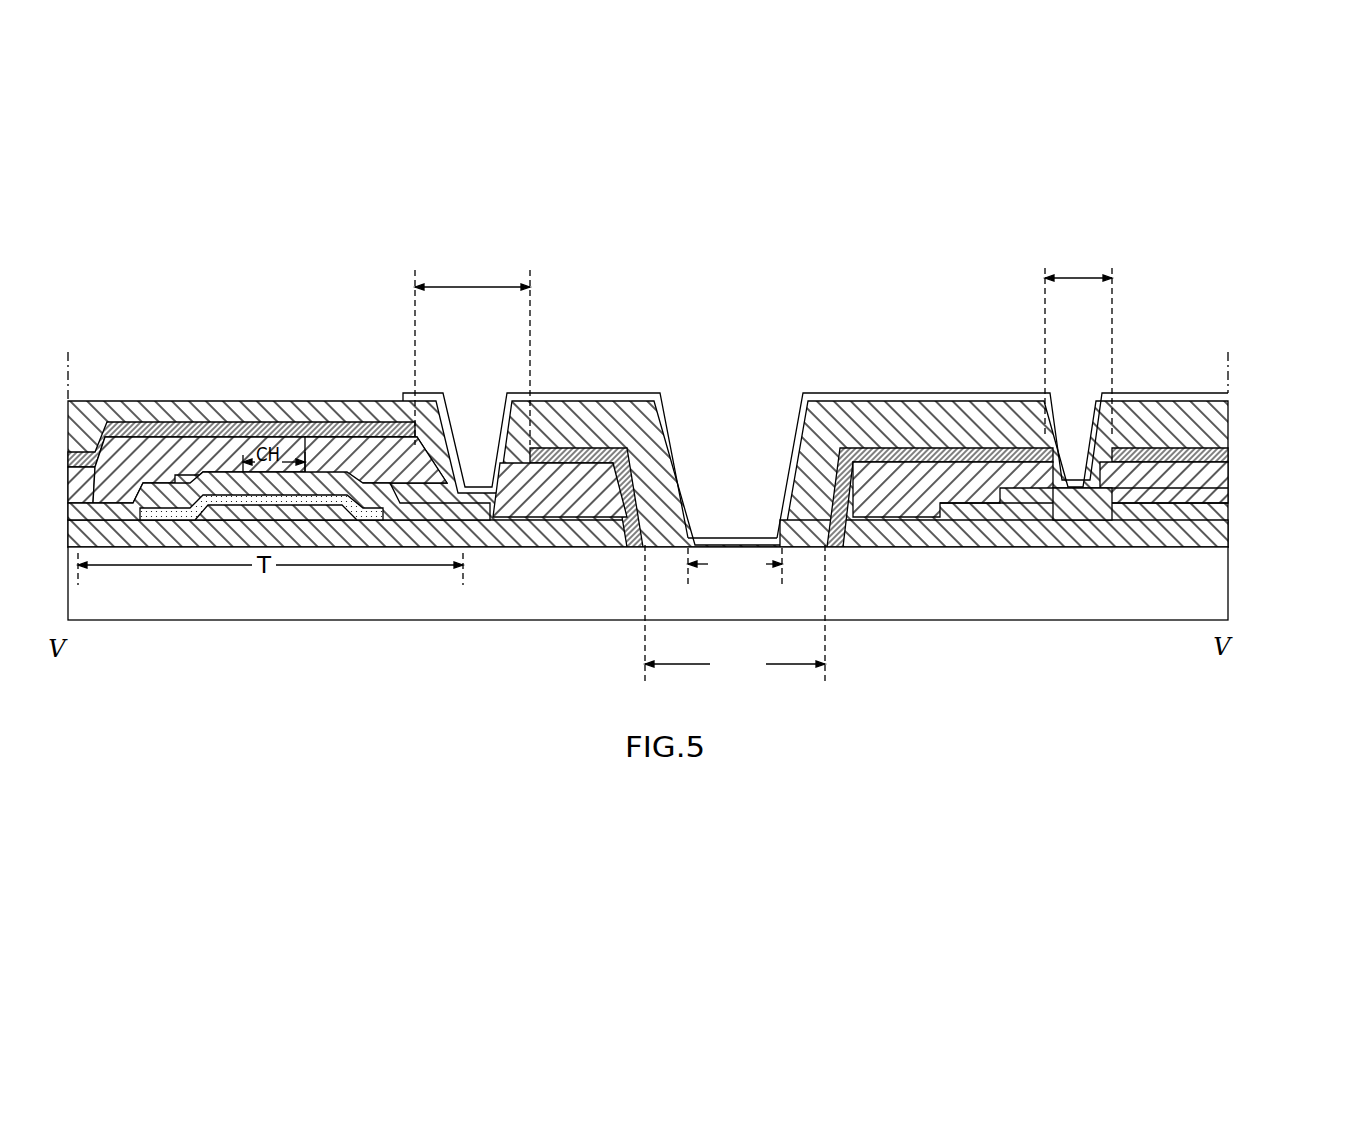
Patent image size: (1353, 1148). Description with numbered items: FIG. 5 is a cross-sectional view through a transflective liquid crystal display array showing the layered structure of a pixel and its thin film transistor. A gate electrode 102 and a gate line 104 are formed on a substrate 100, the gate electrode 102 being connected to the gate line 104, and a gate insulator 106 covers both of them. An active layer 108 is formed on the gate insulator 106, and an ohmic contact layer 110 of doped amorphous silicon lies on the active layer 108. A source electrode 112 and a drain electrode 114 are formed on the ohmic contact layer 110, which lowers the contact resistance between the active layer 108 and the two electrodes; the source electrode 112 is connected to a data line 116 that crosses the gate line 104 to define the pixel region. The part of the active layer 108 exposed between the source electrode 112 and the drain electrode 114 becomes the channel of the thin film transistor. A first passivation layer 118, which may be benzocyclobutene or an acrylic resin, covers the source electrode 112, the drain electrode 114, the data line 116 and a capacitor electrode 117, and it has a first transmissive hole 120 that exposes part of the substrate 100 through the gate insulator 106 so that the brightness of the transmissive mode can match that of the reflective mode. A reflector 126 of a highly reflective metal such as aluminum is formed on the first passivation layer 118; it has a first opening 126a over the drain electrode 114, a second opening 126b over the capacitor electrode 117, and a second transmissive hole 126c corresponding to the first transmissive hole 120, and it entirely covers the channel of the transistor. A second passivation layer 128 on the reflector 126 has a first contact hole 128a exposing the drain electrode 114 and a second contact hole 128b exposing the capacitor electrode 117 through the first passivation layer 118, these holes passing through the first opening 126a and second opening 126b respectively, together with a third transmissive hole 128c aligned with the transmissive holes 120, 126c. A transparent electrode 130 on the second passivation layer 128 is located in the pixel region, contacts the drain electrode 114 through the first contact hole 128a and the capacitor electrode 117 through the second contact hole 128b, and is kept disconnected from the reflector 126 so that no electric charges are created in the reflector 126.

The substrate 100 is at (537, 592).
The gate electrode 102 is at (282, 528).
The gate line 104 is at (1123, 533).
The gate insulator 106 is at (400, 528).
The active layer 108 is at (163, 522).
The ohmic contact layer 110 is at (193, 465).
The source electrode 112 is at (160, 490).
The drain electrode 114 is at (355, 425).
The data line 116 is at (97, 462).
The capacitor electrode 117 is at (1090, 505).
The first passivation layer 118 is at (218, 440).
The first transmissive hole 120 is at (728, 485).
The reflector 126 is at (396, 418).
The first opening 126a is at (472, 353).
The second opening 126b is at (1078, 344).
The second transmissive hole 126c is at (735, 615).
The second passivation layer 128 is at (266, 408).
The first contact hole 128a is at (481, 418).
The second contact hole 128b is at (1074, 420).
The third transmissive hole 128c is at (735, 566).
The transparent electrode 130 is at (676, 398).